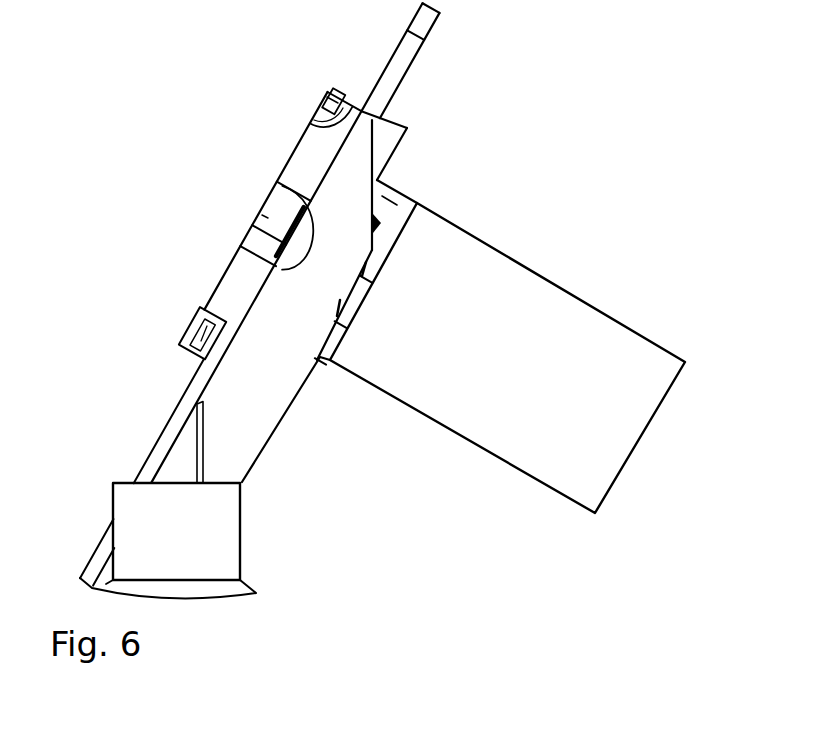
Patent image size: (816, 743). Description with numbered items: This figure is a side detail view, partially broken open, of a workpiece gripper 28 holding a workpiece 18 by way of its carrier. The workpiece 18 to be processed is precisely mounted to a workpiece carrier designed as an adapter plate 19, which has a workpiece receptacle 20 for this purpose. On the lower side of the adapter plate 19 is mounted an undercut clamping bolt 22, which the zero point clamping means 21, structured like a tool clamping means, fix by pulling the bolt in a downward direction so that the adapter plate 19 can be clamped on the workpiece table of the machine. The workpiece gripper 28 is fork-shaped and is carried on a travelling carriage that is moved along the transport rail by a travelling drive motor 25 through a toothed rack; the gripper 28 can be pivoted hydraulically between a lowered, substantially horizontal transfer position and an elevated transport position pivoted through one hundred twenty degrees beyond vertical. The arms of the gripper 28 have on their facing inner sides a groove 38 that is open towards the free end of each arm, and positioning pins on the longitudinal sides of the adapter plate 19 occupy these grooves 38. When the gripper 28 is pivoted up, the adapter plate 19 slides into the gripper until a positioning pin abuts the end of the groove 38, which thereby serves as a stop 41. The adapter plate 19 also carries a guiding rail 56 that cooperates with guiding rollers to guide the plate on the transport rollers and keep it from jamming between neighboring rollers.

The workpiece 18 is at (512, 268).
The adapter plate 19 is at (398, 188).
The workpiece receptacle 20 is at (418, 200).
The zero point clamping means 21 is at (280, 178).
The undercut clamping bolt 22 is at (263, 217).
The travelling drive motor 25 is at (233, 520).
The workpiece gripper 28 is at (186, 254).
The groove 38 is at (320, 127).
The stop 41 is at (200, 320).
The guiding rail 56 is at (383, 73).